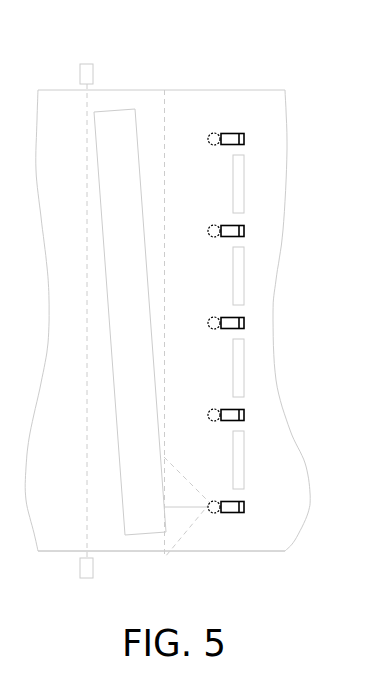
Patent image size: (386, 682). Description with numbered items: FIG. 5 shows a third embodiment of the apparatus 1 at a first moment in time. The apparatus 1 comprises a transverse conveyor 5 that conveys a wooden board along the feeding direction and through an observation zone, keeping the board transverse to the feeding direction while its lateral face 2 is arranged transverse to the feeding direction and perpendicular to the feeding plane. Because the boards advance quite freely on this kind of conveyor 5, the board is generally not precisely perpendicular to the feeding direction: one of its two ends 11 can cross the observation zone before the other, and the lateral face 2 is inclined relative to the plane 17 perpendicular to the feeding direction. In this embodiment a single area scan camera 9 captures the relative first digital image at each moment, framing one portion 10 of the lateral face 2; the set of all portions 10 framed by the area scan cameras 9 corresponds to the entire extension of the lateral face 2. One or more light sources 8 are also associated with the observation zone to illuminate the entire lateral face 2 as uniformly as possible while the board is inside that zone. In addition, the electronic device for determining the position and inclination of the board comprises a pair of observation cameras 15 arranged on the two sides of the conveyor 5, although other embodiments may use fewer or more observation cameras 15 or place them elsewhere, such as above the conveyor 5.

The apparatus 1 is at (279, 566).
The lateral face 2 is at (153, 252).
The transverse conveyor 5 is at (267, 521).
The light source 8 is at (236, 366).
The area scan camera 9 is at (230, 136).
The portion of the lateral face 10 is at (174, 492).
The end of the wooden board 11 is at (118, 100).
The observation camera 15 is at (87, 73).
The plane perpendicular to the feeding direction 17 is at (163, 140).